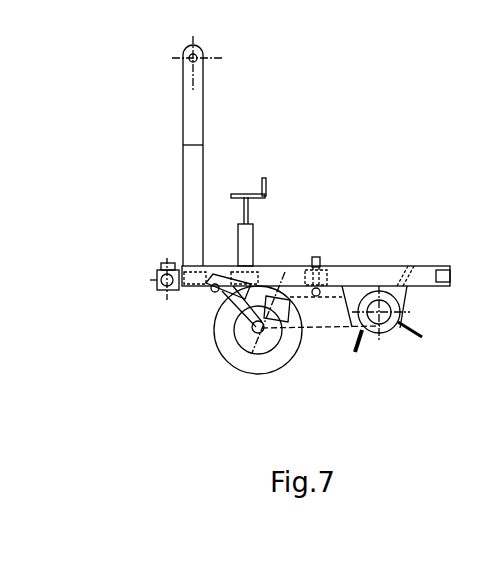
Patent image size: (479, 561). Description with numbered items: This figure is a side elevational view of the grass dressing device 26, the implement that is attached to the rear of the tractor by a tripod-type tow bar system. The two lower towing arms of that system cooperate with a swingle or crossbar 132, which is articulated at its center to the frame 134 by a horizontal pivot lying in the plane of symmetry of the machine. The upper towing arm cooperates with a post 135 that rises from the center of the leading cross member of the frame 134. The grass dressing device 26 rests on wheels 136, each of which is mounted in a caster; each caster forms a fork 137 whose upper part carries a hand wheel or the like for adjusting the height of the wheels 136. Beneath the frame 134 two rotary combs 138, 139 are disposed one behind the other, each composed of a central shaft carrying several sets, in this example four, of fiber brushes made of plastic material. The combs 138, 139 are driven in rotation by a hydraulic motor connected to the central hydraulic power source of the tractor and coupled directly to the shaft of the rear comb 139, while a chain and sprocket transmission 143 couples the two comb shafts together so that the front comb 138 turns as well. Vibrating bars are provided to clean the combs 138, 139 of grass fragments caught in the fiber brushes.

The grass dressing device 26 is at (376, 62).
The swingle or crossbar 132 is at (160, 288).
The frame 134 is at (368, 272).
The post 135 is at (193, 180).
The wheels 136 is at (275, 352).
The fork 137 is at (247, 235).
The rotary comb 138 is at (227, 339).
The rotary comb 139 is at (405, 347).
The chain and sprocket transmission 143 is at (335, 330).